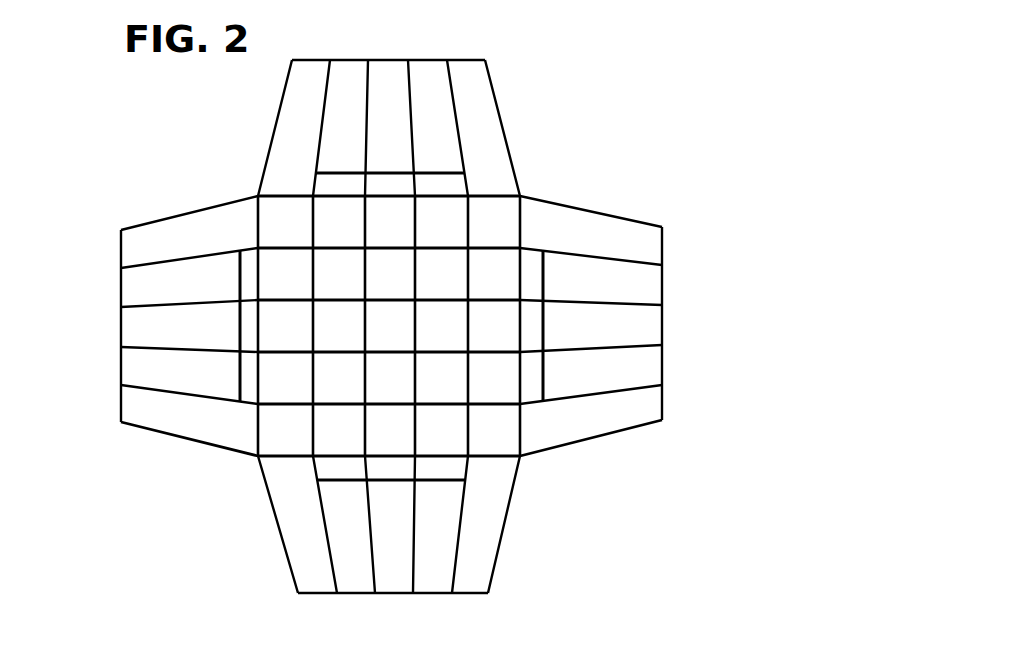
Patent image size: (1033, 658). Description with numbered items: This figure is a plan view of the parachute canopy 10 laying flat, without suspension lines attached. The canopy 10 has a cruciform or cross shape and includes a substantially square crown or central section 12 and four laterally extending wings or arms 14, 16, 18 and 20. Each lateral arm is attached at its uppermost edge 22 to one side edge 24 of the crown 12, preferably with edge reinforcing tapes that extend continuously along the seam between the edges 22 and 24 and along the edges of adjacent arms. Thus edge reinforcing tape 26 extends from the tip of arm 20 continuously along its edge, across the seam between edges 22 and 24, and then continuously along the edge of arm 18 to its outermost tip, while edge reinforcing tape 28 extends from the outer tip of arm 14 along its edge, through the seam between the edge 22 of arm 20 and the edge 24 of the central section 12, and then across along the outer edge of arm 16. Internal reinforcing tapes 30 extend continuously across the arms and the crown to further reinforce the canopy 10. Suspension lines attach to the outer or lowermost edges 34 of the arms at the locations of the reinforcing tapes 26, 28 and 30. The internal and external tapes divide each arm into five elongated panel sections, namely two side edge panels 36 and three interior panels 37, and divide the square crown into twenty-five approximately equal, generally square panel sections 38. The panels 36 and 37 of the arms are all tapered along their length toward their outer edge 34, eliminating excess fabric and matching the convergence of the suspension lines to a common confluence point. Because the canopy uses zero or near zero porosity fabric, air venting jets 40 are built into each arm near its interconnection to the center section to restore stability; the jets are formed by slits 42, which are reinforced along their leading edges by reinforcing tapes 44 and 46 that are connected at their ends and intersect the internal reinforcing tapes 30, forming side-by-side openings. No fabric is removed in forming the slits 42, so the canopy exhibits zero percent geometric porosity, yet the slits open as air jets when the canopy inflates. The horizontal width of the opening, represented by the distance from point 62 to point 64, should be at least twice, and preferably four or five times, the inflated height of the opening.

The canopy 10 is at (100, 308).
The crown or central section 12 is at (342, 255).
The arm 14 is at (640, 377).
The arm 16 is at (120, 275).
The arm 18 is at (395, 70).
The arm 20 is at (307, 580).
The uppermost edge 22 is at (518, 420).
The side edge 24 is at (280, 455).
The edge reinforcing tape 26 is at (505, 103).
The edge reinforcing tape 28 is at (182, 444).
The internal reinforcing tapes 30 is at (356, 355).
The outer or lowermost edges 34 is at (471, 60).
The side edge panels 36 is at (650, 245).
The interior panels 37 is at (647, 283).
The panel sections 38 is at (453, 212).
The air venting jets 40 is at (393, 483).
The slits 42 is at (345, 483).
The reinforcing tape 44 is at (350, 172).
The reinforcing tape 46 is at (328, 173).
The point 62 is at (547, 408).
The point 64 is at (542, 248).